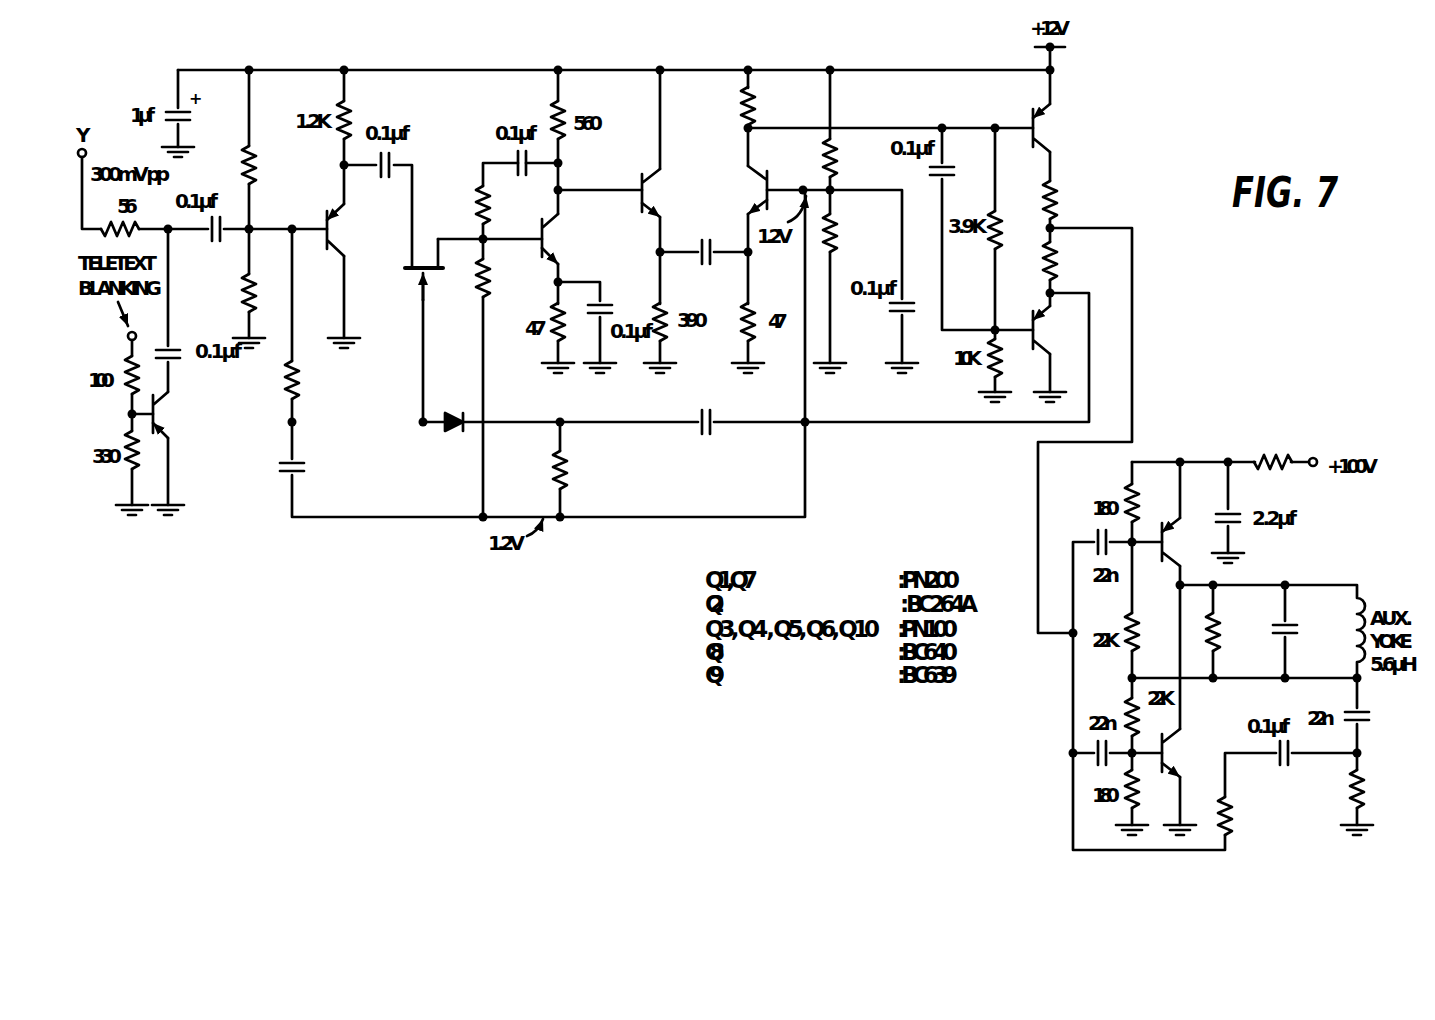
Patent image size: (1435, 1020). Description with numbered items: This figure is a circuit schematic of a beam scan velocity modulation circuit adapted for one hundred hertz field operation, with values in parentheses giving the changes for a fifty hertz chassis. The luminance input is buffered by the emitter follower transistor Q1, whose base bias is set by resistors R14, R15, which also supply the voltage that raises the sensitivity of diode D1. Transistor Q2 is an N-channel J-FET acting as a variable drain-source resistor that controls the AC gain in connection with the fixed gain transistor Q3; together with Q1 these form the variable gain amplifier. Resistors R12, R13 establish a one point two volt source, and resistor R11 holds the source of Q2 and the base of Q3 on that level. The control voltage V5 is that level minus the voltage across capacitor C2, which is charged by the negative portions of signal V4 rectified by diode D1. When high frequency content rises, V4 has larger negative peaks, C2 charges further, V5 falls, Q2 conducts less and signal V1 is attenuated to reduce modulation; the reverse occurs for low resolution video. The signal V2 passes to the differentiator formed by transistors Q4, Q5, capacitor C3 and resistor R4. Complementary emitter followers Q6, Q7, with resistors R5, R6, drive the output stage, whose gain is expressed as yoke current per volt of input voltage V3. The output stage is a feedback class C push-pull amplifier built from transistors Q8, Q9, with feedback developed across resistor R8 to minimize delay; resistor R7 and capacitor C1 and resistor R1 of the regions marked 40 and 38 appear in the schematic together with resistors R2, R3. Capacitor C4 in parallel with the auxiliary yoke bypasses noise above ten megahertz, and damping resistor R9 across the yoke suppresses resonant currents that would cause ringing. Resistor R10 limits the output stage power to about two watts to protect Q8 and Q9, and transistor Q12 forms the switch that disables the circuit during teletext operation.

The clamp circuit 40 is at (394, 467).
The feedback network 38 is at (619, 477).
The signal V1 is at (292, 214).
The voltage node V2 is at (568, 199).
The input voltage V3 is at (988, 122).
The signal V4 is at (553, 411).
The control voltage V5 is at (412, 413).
The transistor Q1 is at (345, 230).
The transistor Q2 is at (430, 263).
The transistor Q3 is at (561, 239).
The transistor Q4 is at (662, 193).
The transistor Q5 is at (751, 190).
The transistor Q6 is at (1050, 128).
The transistor Q7 is at (1050, 330).
The transistor Q8 is at (1179, 542).
The transistor Q9 is at (1185, 753).
The transistor Q12 is at (177, 415).
The resistor R1 is at (547, 469).
The resistor R2 is at (262, 399).
The resistor R3 is at (506, 208).
The resistor R4 is at (732, 116).
The resistor R5 is at (1066, 195).
The resistor R6 is at (1066, 264).
The resistor R7 is at (1246, 819).
The resistor R8 is at (1342, 789).
The damping resistor R9 is at (1237, 639).
The resistor R10 is at (1273, 438).
The resistor R11 is at (504, 274).
The resistor R12 is at (811, 158).
The resistor R13 is at (852, 239).
The resistor R14 is at (232, 160).
The resistor R15 is at (230, 297).
The capacitor C1 is at (732, 454).
The capacitor C2 is at (286, 481).
The capacitor C3 is at (710, 213).
The capacitor C4 is at (1310, 639).
The diode D1 is at (450, 449).